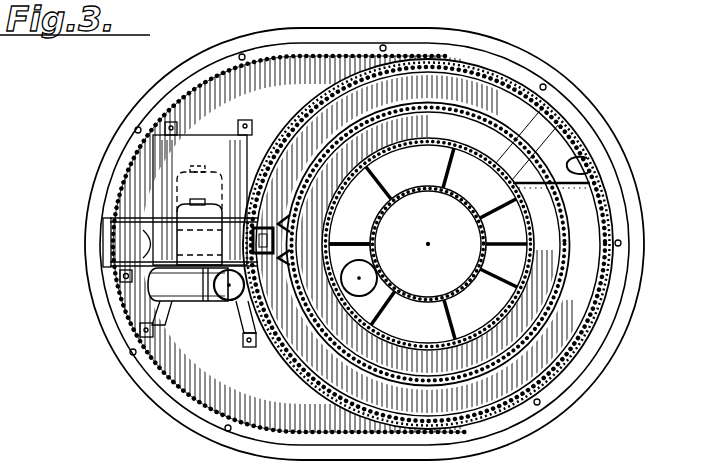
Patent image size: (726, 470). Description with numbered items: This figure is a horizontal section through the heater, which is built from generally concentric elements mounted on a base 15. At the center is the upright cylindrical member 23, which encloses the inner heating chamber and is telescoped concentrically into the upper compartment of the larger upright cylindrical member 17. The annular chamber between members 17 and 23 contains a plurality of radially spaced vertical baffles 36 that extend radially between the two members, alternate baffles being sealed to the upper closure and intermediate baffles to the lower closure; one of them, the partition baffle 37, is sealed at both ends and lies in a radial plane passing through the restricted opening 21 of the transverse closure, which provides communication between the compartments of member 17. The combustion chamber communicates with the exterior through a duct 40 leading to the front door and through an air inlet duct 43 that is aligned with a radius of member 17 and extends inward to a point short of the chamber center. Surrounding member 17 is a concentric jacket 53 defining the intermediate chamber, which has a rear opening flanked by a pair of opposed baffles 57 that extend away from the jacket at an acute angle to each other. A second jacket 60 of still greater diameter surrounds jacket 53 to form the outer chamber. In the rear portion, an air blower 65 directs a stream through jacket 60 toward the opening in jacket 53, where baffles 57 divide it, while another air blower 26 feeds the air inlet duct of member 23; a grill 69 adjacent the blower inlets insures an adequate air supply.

The base 15 is at (483, 446).
The upright cylindrical member 17 is at (522, 130).
The restricted opening 21 is at (357, 291).
The upright cylindrical member 23 is at (457, 288).
The air blower 26 is at (183, 305).
The vertical baffles 36 is at (498, 200).
The partition baffle 37 is at (352, 257).
The duct 40 is at (557, 249).
The air inlet duct 43 is at (105, 246).
The jacket 53 is at (537, 148).
The opposed baffles 57 is at (280, 214).
The second jacket 60 is at (590, 167).
The air blower 65 is at (107, 221).
The grill 69 is at (113, 291).